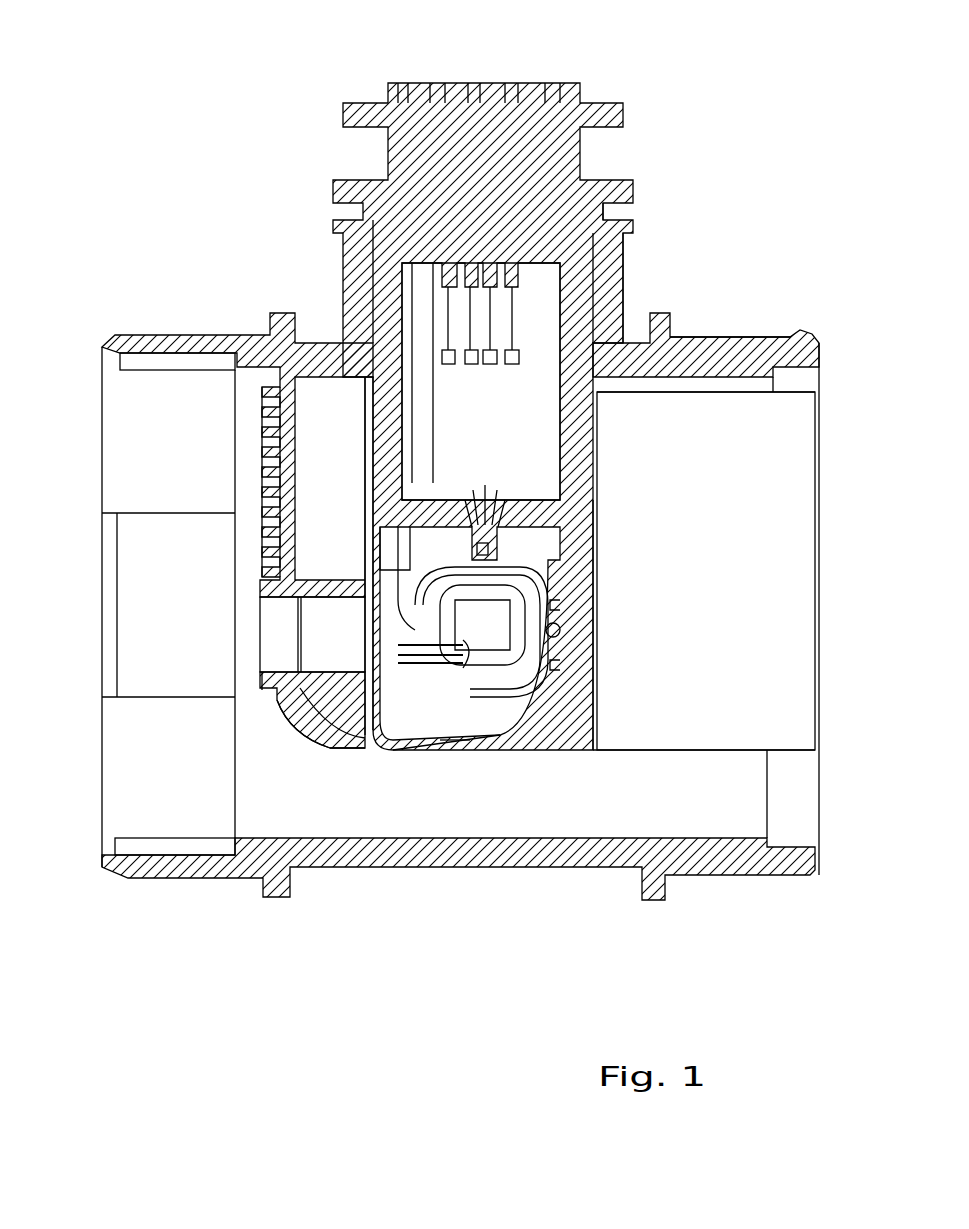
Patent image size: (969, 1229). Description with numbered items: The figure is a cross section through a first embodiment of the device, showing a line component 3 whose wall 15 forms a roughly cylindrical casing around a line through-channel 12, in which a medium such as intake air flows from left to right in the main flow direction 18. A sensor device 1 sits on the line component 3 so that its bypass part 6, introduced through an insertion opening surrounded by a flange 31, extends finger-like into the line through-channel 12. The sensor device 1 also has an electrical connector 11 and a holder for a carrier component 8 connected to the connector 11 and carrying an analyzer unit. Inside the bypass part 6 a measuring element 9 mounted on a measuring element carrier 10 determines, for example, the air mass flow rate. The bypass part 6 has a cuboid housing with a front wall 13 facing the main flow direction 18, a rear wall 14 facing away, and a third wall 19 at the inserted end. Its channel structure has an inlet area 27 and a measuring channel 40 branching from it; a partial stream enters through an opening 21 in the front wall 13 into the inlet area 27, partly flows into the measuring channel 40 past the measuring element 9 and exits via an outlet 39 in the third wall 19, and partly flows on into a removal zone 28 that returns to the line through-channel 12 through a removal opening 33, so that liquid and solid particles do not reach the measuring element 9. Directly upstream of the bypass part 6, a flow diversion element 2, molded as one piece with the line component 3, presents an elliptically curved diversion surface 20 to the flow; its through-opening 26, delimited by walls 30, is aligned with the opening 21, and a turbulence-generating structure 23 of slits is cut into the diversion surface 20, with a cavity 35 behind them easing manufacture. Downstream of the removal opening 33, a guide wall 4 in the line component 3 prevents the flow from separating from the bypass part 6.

The sensor device 1 is at (425, 285).
The flow diversion element 2 is at (292, 460).
The line component 3 is at (703, 287).
The guide wall 4 is at (720, 474).
The bypass part 6 is at (580, 492).
The carrier component 8 is at (427, 283).
The measuring element 9 is at (580, 533).
The measuring element carrier 10 is at (580, 508).
The electrical connector 11 is at (553, 83).
The line through-channel 12 is at (668, 806).
The front wall 13 is at (372, 430).
The rear wall 14 is at (593, 665).
The wall 15 is at (757, 337).
The main flow direction 18 is at (198, 601).
The third wall 19 is at (448, 752).
The diversion surface 20 is at (262, 433).
The opening 21 is at (373, 640).
The turbulence-generating structure 23 is at (262, 522).
The through-opening 26 is at (270, 690).
The inlet area 27 is at (320, 690).
The removal zone 28 is at (365, 745).
The walls 30 is at (300, 730).
The flange 31 is at (624, 245).
The removal opening 33 is at (470, 660).
The cavity 35 is at (323, 554).
The outlet 39 is at (415, 748).
The measuring channel 40 is at (580, 560).